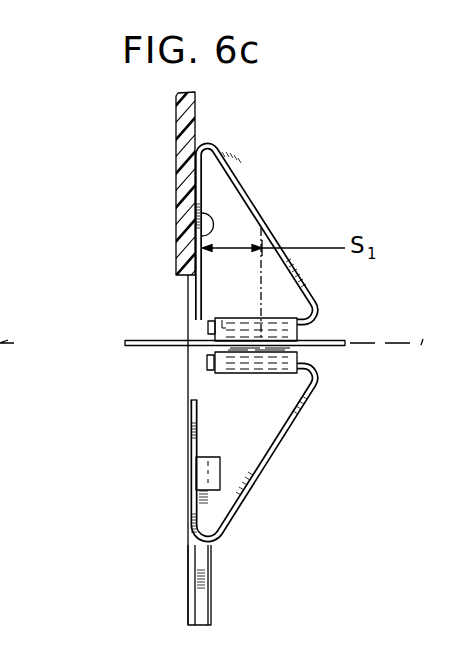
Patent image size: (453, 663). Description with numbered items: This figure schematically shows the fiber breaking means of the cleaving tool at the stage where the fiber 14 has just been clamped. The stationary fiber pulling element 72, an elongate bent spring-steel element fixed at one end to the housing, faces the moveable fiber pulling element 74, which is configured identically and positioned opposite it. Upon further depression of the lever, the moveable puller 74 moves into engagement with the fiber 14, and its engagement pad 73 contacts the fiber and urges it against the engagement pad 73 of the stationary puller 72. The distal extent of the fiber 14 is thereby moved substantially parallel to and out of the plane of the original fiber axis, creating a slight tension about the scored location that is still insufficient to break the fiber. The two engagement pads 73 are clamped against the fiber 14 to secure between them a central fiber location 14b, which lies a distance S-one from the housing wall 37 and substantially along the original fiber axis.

The housing wall 37 is at (194, 124).
The stationary fiber pulling element 72 is at (249, 194).
The engagement pad 73 is at (213, 315).
The fiber 14 is at (226, 336).
The central fiber location 14b is at (258, 342).
The moveable fiber pulling element 74 is at (260, 470).